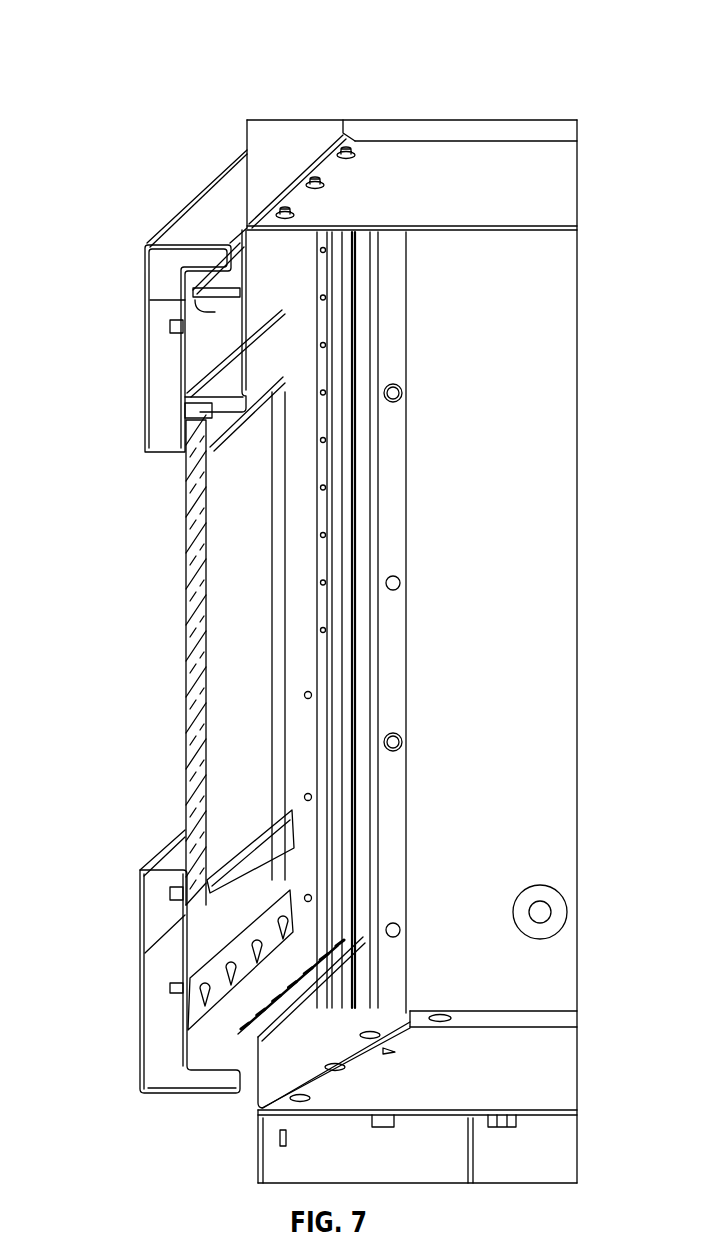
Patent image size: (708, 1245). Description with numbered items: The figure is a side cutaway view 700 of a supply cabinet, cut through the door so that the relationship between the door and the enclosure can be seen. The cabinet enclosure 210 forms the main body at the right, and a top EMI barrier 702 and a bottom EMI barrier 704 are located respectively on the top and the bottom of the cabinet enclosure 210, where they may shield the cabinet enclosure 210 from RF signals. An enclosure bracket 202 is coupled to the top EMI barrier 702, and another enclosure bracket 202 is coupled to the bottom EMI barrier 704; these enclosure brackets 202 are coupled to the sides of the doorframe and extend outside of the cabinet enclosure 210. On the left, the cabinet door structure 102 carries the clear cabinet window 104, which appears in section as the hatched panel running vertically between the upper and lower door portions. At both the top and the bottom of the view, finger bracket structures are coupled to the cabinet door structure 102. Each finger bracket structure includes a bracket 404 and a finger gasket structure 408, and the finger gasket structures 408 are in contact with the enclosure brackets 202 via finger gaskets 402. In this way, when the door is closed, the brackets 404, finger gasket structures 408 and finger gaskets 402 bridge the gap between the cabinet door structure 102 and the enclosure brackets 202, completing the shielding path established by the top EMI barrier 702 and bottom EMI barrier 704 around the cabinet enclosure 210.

The cutaway view 700 is at (108, 73).
The top EMI barrier 702 is at (482, 203).
The bottom EMI barrier 704 is at (489, 1093).
The cabinet enclosure 210 is at (555, 540).
The enclosure bracket 202 is at (293, 238).
The finger gasket structure 408 is at (253, 294).
The bracket 404 is at (208, 330).
The finger gasket 402 is at (206, 302).
The cabinet door structure 102 is at (142, 262).
The clear cabinet window 104 is at (192, 572).